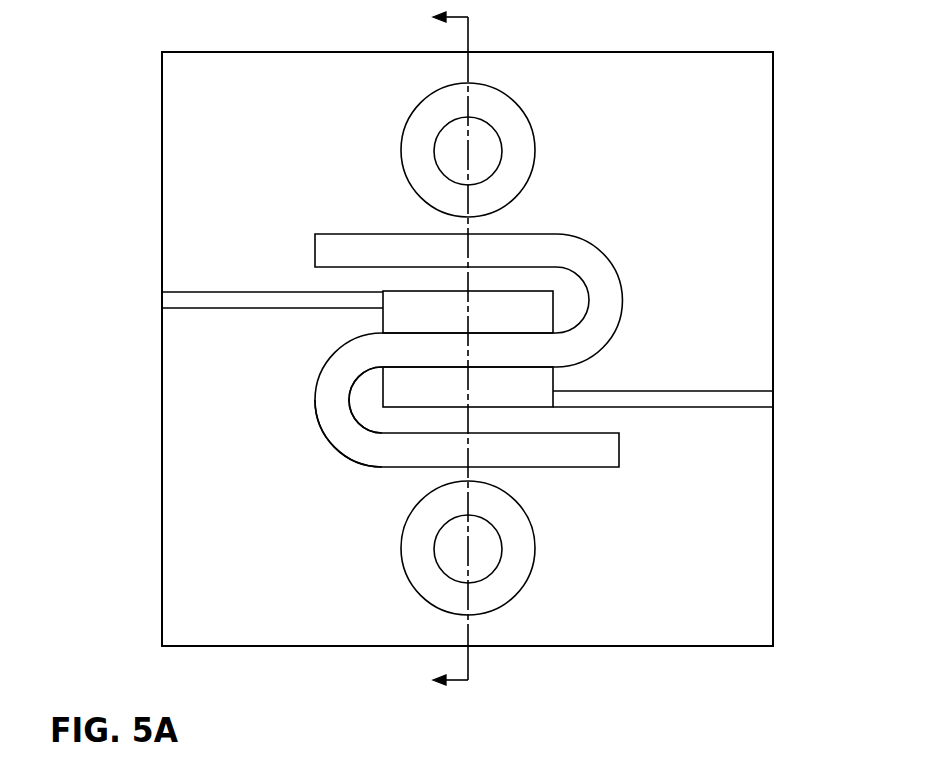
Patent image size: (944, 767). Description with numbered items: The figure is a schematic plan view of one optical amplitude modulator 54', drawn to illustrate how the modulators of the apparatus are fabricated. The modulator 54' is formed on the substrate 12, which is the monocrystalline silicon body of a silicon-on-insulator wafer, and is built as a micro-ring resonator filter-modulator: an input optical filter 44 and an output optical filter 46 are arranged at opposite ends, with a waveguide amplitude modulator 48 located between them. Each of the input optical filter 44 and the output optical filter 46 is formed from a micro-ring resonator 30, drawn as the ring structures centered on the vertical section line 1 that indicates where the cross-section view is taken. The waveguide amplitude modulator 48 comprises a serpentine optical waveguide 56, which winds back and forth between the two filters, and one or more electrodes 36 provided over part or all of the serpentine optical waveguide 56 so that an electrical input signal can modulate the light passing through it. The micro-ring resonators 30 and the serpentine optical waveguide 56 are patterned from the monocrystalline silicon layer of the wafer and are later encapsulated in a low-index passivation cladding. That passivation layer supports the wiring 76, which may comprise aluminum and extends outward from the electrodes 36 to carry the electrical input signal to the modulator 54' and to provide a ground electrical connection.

The substrate 12 is at (222, 616).
The optical amplitude modulator 54' is at (467, 391).
The section line 1 is at (436, 342).
The serpentine optical waveguide 56 is at (337, 350).
The waveguide amplitude modulator 48 is at (300, 434).
The electrodes 36 is at (527, 322).
The wiring 76 is at (219, 309).
The output optical filter 46 is at (378, 177).
The input optical filter 44 is at (378, 567).
The micro-ring resonator 30 is at (411, 113).